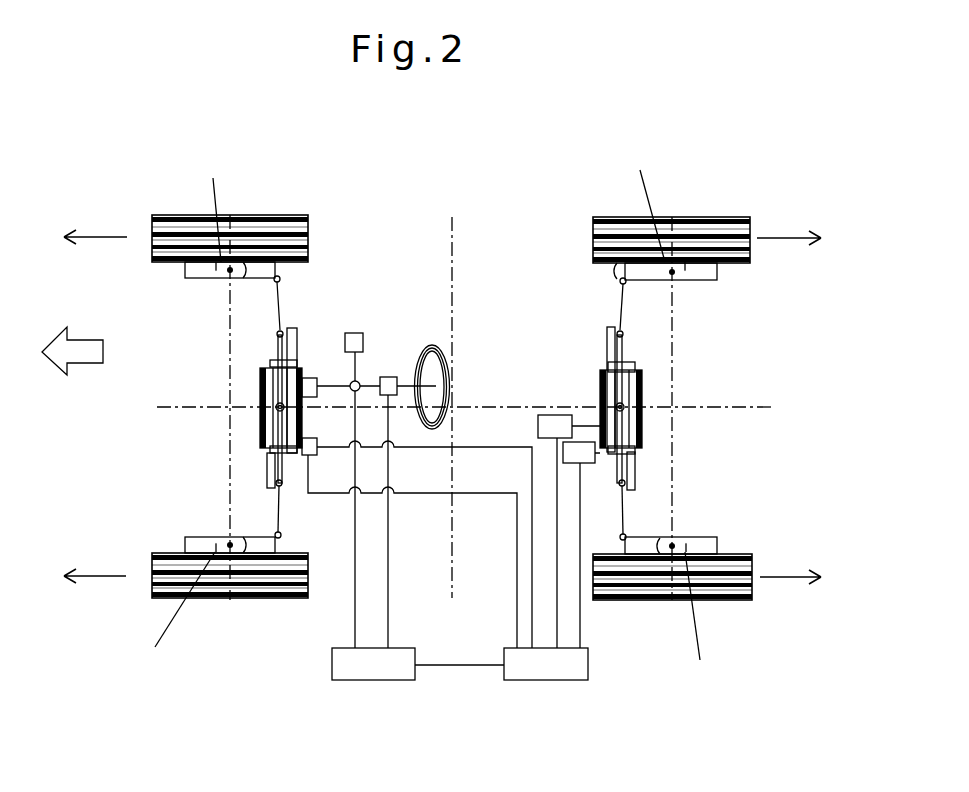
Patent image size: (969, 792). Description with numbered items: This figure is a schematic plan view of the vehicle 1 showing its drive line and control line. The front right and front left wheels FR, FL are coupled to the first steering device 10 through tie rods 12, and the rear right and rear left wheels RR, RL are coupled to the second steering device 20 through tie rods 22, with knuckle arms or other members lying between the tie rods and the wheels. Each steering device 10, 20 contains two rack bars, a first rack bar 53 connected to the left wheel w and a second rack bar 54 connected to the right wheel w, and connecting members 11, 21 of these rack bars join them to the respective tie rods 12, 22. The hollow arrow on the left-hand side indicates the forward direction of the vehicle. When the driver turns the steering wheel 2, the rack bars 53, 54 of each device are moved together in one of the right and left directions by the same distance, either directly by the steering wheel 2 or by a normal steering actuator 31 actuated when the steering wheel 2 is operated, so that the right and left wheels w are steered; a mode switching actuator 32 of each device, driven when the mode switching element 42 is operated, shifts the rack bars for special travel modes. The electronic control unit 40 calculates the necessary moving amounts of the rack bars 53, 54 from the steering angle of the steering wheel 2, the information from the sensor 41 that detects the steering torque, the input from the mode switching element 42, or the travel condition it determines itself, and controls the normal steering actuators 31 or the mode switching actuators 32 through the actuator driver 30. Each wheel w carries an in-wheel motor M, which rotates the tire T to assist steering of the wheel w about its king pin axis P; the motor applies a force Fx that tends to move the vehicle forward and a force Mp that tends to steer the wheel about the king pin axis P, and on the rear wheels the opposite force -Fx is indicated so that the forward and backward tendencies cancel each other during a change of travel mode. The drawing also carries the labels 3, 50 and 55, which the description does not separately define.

The vehicle 1 is at (440, 186).
The steering wheel 2 is at (434, 371).
The steering shaft 3 is at (422, 335).
The first steering device 10 is at (254, 426).
The connecting member 11 is at (279, 339).
The tie rod 12 is at (273, 290).
The second steering device 20 is at (650, 418).
The connecting member 21 is at (633, 365).
The tie rod 22 is at (625, 308).
The actuator driver 30 is at (542, 663).
The normal steering actuator 31 is at (306, 378).
The mode switching actuator 32 is at (314, 456).
The electronic control unit 40 is at (395, 672).
The sensor 41 is at (389, 377).
The mode switching element 42 is at (357, 333).
The steering device 50 is at (135, 415).
The first rack bar 53 is at (273, 453).
The second rack bar 54 is at (260, 373).
The rack bar 55 is at (260, 437).
The tire T is at (293, 227).
The wheel w is at (252, 200).
The king pin axis P is at (228, 274).
The in-wheel motor M is at (192, 268).
The steering force Mp is at (420, 413).
The forward force Fx is at (102, 237).
The front right wheel FR is at (195, 227).
The front left wheel FL is at (155, 565).
The rear right wheel RR is at (633, 222).
The rear left wheel RL is at (717, 597).